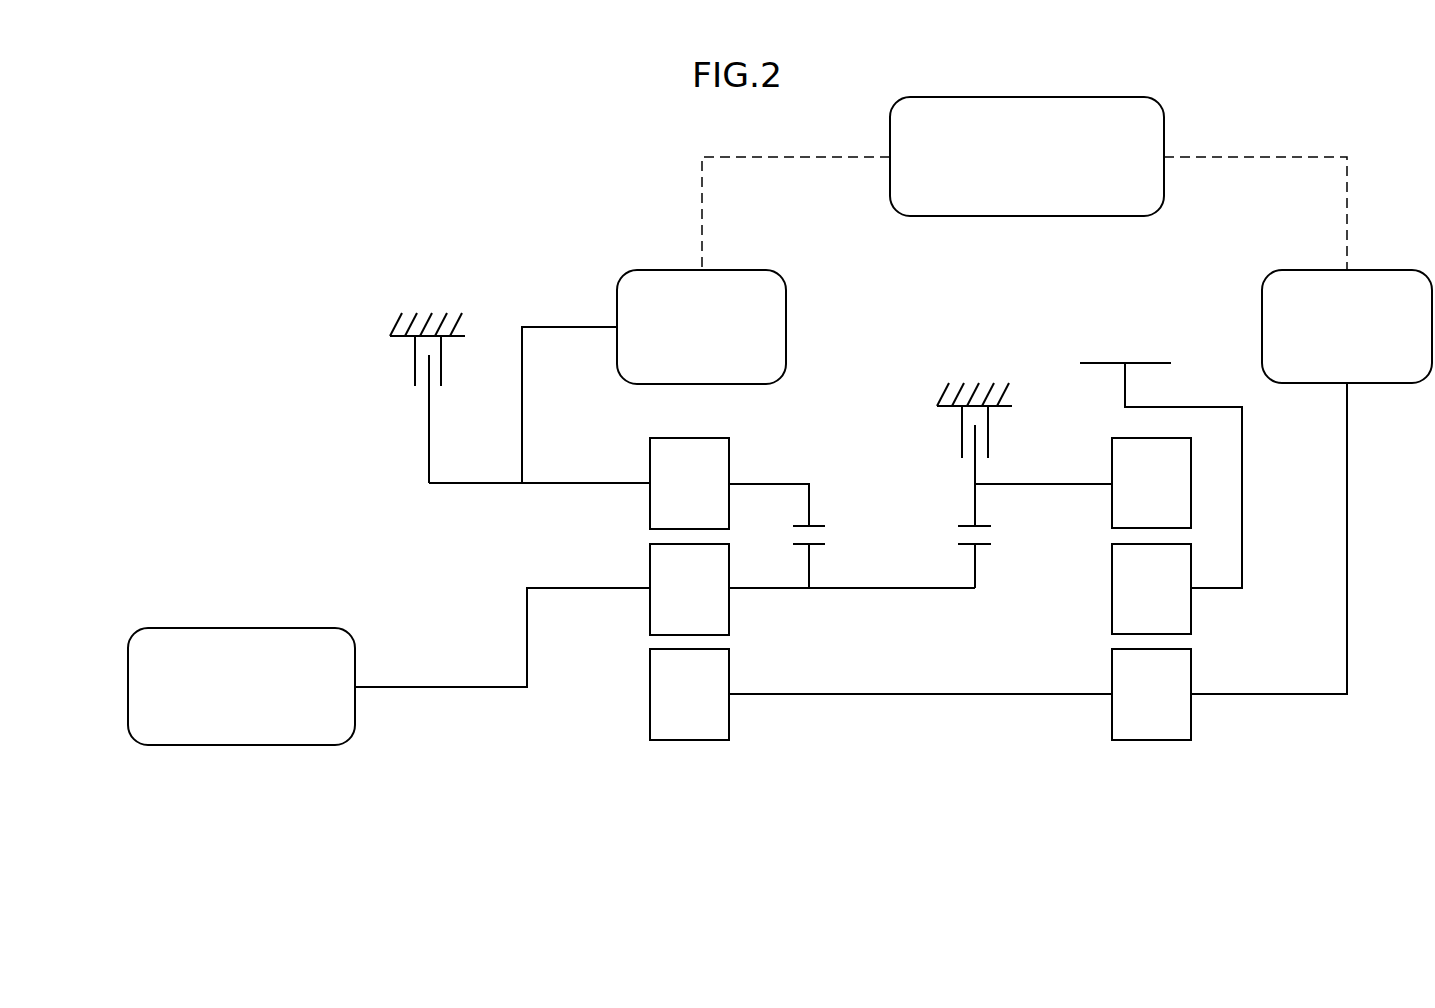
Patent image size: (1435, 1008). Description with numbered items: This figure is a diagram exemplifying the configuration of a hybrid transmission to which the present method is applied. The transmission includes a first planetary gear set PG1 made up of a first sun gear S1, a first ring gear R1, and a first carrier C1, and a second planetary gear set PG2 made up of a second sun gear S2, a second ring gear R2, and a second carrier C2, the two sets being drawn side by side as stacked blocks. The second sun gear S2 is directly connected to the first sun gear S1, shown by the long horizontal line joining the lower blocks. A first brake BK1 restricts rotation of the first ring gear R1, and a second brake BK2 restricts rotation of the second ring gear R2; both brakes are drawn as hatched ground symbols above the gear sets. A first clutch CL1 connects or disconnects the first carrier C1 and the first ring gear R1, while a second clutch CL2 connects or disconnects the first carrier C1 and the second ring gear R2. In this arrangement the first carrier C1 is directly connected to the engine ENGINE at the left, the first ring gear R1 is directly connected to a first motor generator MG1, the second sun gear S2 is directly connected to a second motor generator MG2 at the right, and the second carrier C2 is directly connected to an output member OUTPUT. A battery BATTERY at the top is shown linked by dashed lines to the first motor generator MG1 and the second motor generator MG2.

The battery BATTERY is at (1027, 156).
The first motor generator MG1 is at (701, 327).
The second motor generator MG2 is at (1347, 326).
The first brake BK1 is at (427, 379).
The second brake BK2 is at (974, 436).
The first clutch CL1 is at (807, 536).
The second clutch CL2 is at (1004, 555).
The first planetary gear set PG1 is at (687, 750).
The second planetary gear set PG2 is at (1150, 750).
The first ring gear R1 is at (689, 483).
The first carrier C1 is at (689, 589).
The first sun gear S1 is at (689, 694).
The second ring gear R2 is at (1151, 483).
The second carrier C2 is at (1151, 589).
The second sun gear S2 is at (1151, 694).
The output member OUTPUT is at (1161, 457).
The engine ENGINE is at (241, 686).